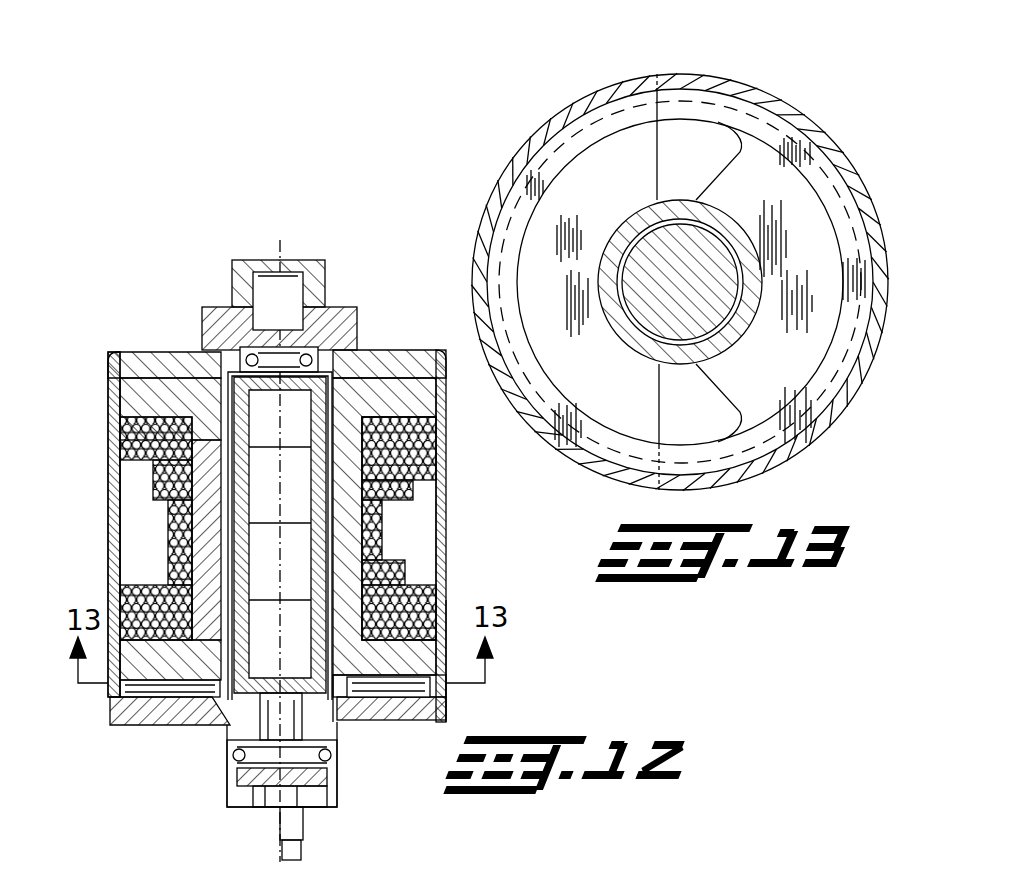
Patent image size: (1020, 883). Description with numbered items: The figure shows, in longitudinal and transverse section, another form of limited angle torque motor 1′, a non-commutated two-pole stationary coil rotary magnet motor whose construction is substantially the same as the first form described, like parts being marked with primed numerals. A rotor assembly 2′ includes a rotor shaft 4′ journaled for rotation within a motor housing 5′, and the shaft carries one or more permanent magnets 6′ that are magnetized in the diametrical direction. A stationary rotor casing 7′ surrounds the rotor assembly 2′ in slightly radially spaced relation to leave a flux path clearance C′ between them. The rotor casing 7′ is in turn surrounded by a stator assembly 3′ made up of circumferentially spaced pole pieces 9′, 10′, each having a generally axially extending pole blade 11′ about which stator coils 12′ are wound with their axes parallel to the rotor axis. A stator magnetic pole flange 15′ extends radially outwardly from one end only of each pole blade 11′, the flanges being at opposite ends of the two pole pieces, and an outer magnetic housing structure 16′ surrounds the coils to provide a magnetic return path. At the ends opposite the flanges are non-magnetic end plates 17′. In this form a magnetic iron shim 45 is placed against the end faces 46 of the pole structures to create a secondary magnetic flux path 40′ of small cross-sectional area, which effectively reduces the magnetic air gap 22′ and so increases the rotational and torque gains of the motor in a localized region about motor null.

In FIG. 12, the limited angle torque motor 1′ is at (401, 316).
In FIG. 13, the limited angle torque motor 1′ is at (600, 80).
In FIG. 12, the rotor assembly 2′ is at (118, 432).
In FIG. 12, the stator assembly 3′ is at (132, 374).
In FIG. 12, the rotor shaft 4′ is at (268, 711).
In FIG. 13, the rotor shaft 4′ is at (640, 300).
In FIG. 12, the motor housing 5′ is at (358, 305).
In FIG. 12, the permanent magnet 6′ is at (257, 487).
In FIG. 12, the rotor casing 7′ is at (333, 503).
In FIG. 13, the rotor casing 7′ is at (630, 222).
In FIG. 12, the pole piece 9′ is at (160, 384).
In FIG. 12, the pole piece 10′ is at (403, 678).
In FIG. 12, the pole blade 11′ is at (180, 542).
In FIG. 12, the stator coil 12′ is at (110, 474).
In FIG. 12, the stator magnetic pole flange 15′ is at (184, 388).
In FIG. 13, the stator magnetic pole flange 15′ is at (790, 372).
In FIG. 12, the outer magnetic housing structure 16′ is at (434, 546).
In FIG. 12, the end plate 17′ is at (395, 373).
In FIG. 13, the end plate 17′ is at (553, 212).
In FIG. 13, the magnetic air gap 22′ is at (675, 72).
In FIG. 12, the secondary magnetic flux path 40′ is at (432, 694).
In FIG. 13, the secondary magnetic flux path 40′ is at (776, 118).
In FIG. 12, the magnetic iron shim 45 is at (448, 657).
In FIG. 13, the magnetic iron shim 45 is at (826, 177).
In FIG. 12, the end face 46 is at (370, 690).
In FIG. 13, the end face 46 is at (823, 253).
In FIG. 12, the flux path clearance C′ is at (313, 553).